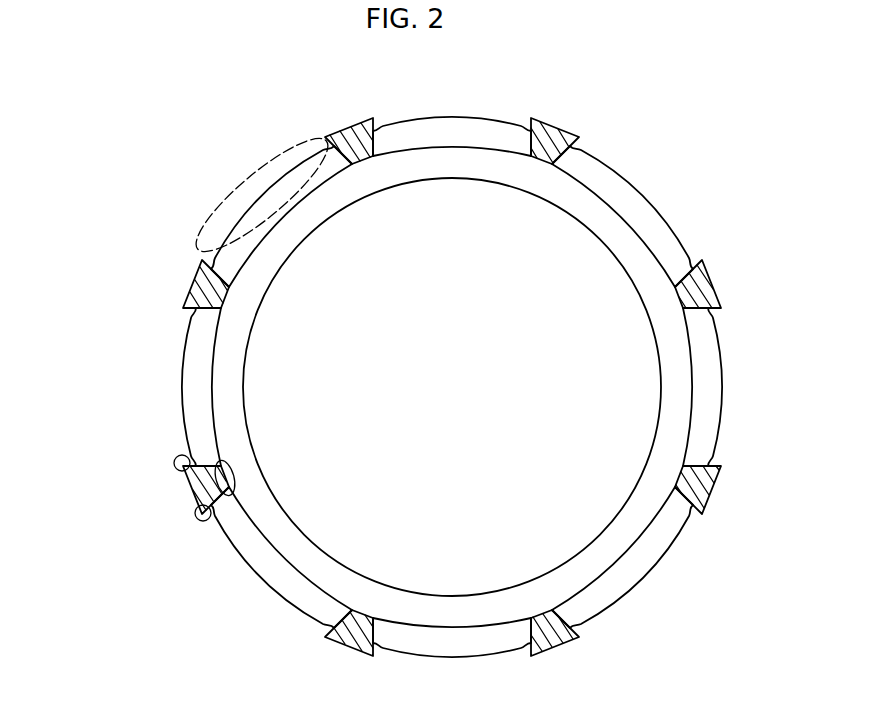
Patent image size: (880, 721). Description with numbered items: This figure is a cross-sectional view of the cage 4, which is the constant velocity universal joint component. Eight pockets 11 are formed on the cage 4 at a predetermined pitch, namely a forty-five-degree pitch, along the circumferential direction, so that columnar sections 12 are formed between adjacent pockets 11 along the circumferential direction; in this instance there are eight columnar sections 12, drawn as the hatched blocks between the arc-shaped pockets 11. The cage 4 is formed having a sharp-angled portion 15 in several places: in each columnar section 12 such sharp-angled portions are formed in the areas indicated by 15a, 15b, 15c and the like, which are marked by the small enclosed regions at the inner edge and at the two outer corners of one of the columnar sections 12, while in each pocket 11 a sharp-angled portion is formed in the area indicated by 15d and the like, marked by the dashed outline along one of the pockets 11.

The cage 4 is at (557, 114).
The pocket 11 is at (383, 124).
The columnar section 12 is at (340, 127).
The sharp-angled portion 15 is at (200, 345).
The sharp-angled portion area 15a is at (236, 470).
The sharp-angled portion area 15b is at (173, 464).
The sharp-angled portion area 15c is at (201, 522).
The sharp-angled portion area 15d is at (236, 184).